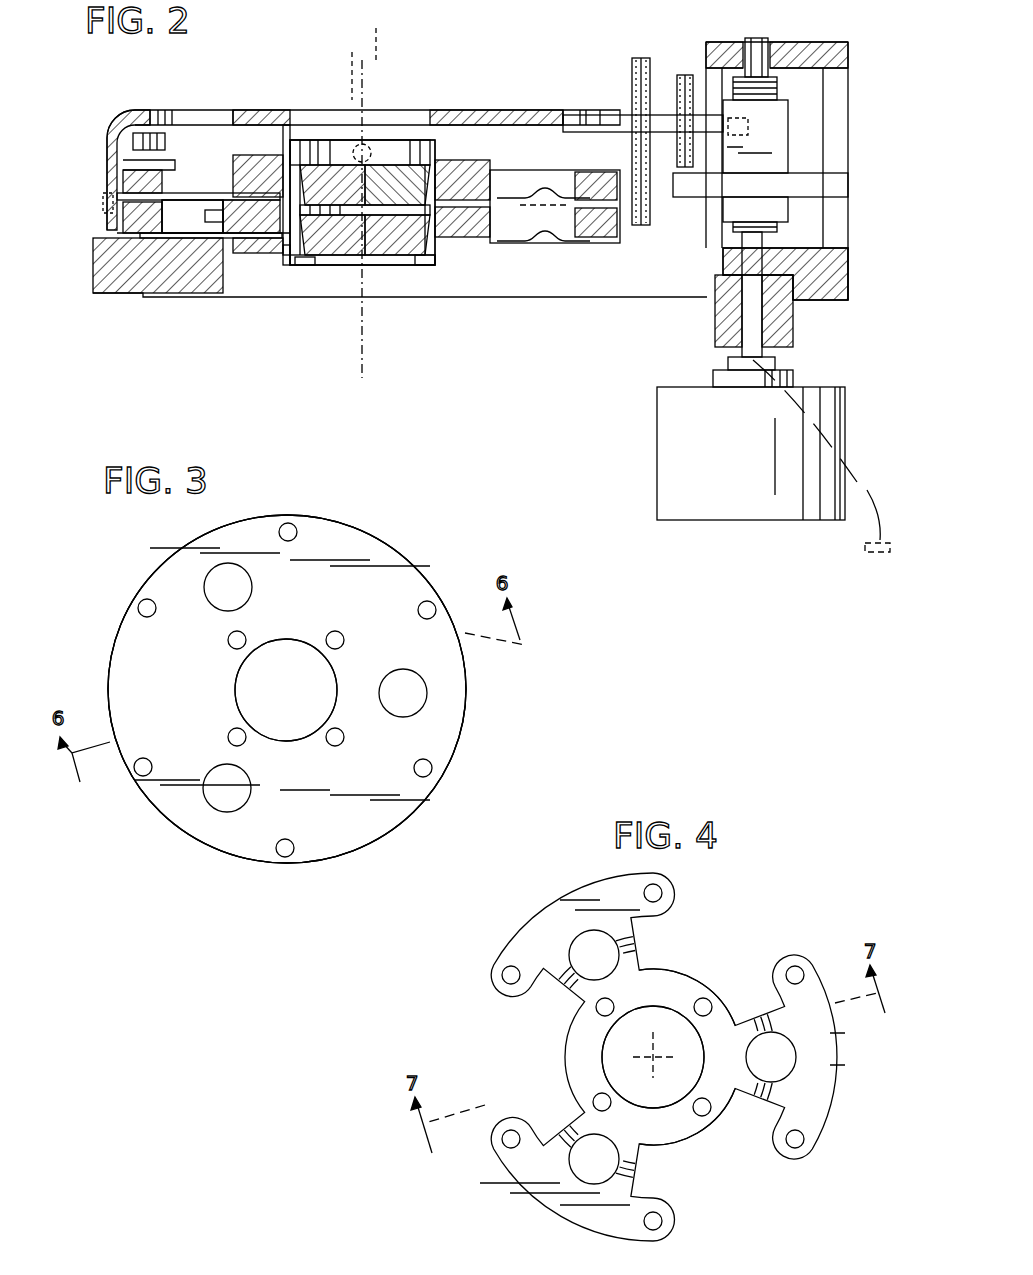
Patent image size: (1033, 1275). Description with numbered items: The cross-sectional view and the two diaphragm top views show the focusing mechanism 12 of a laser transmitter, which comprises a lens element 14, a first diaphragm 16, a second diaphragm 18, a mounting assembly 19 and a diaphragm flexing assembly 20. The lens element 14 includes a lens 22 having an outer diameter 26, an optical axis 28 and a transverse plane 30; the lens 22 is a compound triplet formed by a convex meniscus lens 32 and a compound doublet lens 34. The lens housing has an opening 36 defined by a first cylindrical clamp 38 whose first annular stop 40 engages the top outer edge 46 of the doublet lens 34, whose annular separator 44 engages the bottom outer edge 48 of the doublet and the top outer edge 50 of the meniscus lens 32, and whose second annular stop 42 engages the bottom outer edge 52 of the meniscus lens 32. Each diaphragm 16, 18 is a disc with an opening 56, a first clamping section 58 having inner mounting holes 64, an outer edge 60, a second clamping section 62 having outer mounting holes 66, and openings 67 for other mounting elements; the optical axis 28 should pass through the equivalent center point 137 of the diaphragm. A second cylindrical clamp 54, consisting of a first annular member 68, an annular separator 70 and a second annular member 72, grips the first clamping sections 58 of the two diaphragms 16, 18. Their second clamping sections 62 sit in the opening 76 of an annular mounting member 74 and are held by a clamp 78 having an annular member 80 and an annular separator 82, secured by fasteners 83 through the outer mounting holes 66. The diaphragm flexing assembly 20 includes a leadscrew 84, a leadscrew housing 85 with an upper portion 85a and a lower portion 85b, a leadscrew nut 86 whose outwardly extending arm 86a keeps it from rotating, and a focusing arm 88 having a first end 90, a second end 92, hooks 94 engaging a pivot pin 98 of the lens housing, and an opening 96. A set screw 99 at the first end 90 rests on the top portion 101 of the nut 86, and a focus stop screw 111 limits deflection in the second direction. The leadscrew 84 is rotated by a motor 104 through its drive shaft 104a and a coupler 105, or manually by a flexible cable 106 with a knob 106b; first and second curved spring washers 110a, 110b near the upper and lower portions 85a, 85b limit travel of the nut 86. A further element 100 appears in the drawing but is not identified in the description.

In FIG. 2, the focusing mechanism 12 is at (92, 178).
In FIG. 2, the lens element 14 is at (303, 275).
In FIG. 2, the first diaphragm 16 is at (178, 192).
In FIG. 3, the first diaphragm 16 is at (162, 825).
In FIG. 4, the first diaphragm 16 is at (565, 1210).
In FIG. 2, the second diaphragm 18 is at (185, 270).
In FIG. 3, the second diaphragm 18 is at (275, 689).
In FIG. 4, the second diaphragm 18 is at (608, 1107).
In FIG. 2, the mounting assembly 19 is at (92, 268).
In FIG. 2, the diaphragm flexing assembly 20 is at (595, 100).
In FIG. 2, the lens 22 is at (398, 260).
In FIG. 2, the outer diameter 26 is at (455, 230).
In FIG. 2, the optical axis 28 is at (375, 372).
In FIG. 2, the transverse plane 30 is at (527, 205).
In FIG. 2, the convex meniscus lens 32 is at (365, 268).
In FIG. 2, the compound doublet lens 34 is at (340, 170).
In FIG. 2, the opening 36 is at (318, 265).
In FIG. 2, the first cylindrical clamp 38 is at (292, 265).
In FIG. 2, the first annular stop 40 is at (297, 143).
In FIG. 2, the second annular stop 42 is at (425, 260).
In FIG. 2, the annular separator 44 is at (440, 190).
In FIG. 2, the top outer edge 46 is at (385, 160).
In FIG. 2, the bottom outer edge 48 is at (395, 195).
In FIG. 2, the top outer edge 50 is at (347, 272).
In FIG. 2, the bottom outer edge 52 is at (268, 262).
In FIG. 2, the second cylindrical clamp 54 is at (255, 170).
In FIG. 3, the opening 56 is at (237, 690).
In FIG. 4, the opening 56 is at (680, 1010).
In FIG. 3, the first clamping section 58 is at (230, 670).
In FIG. 4, the first clamping section 58 is at (650, 998).
In FIG. 3, the outer edge 60 is at (420, 575).
In FIG. 4, the outer edge 60 is at (810, 965).
In FIG. 3, the second clamping section 62 is at (380, 555).
In FIG. 4, the second clamping section 62 is at (815, 988).
In FIG. 3, the inner mounting holes 64 is at (345, 737).
In FIG. 4, the inner mounting holes 64 is at (708, 1115).
In FIG. 3, the outer mounting holes 66 is at (432, 770).
In FIG. 4, the outer mounting holes 66 is at (805, 1142).
In FIG. 3, the openings 67 is at (222, 812).
In FIG. 4, the openings 67 is at (570, 940).
In FIG. 2, the first annular member 68 is at (240, 158).
In FIG. 2, the annular separator 70 is at (225, 218).
In FIG. 2, the second annular member 72 is at (255, 253).
In FIG. 2, the annular mounting member 74 is at (105, 275).
In FIG. 2, the opening 76 is at (140, 225).
In FIG. 2, the clamp 78 is at (125, 236).
In FIG. 2, the annular member 80 is at (125, 172).
In FIG. 2, the annular separator 82 is at (123, 215).
In FIG. 2, the fasteners 83 is at (135, 143).
In FIG. 2, the leadscrew 84 is at (777, 90).
In FIG. 2, the leadscrew housing 85 is at (838, 50).
In FIG. 2, the upper portion 85a is at (820, 68).
In FIG. 2, the lower portion 85b is at (805, 240).
In FIG. 2, the leadscrew nut 86 is at (780, 117).
In FIG. 2, the first outwardly extending arm 86a is at (830, 185).
In FIG. 2, the focusing arm 88 is at (490, 110).
In FIG. 2, the first end 90 is at (710, 50).
In FIG. 2, the second end 92 is at (120, 125).
In FIG. 2, the hooks 94 is at (374, 32).
In FIG. 2, the opening 96 is at (440, 112).
In FIG. 2, the pivot pin 98 is at (342, 65).
In FIG. 2, the set screw 99 is at (680, 80).
In FIG. 2, the pin 100 is at (105, 203).
In FIG. 2, the top portion 101 is at (750, 155).
In FIG. 2, the motor 104 is at (662, 455).
In FIG. 2, the drive shaft 104a is at (762, 350).
In FIG. 2, the coupler 105 is at (793, 320).
In FIG. 2, the flexible cable 106 is at (862, 478).
In FIG. 2, the knob 106b is at (865, 548).
In FIG. 2, the first curved spring washer 110a is at (760, 40).
In FIG. 2, the second curved spring washer 110b is at (770, 225).
In FIG. 2, the focus stop screw 111 is at (635, 70).
In FIG. 4, the equivalent center point 137 is at (650, 1055).